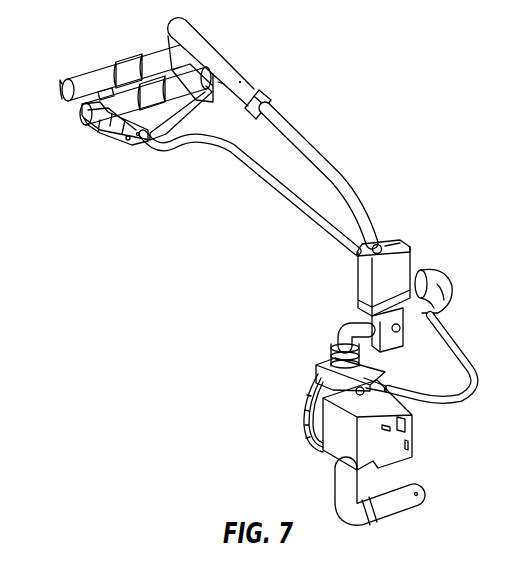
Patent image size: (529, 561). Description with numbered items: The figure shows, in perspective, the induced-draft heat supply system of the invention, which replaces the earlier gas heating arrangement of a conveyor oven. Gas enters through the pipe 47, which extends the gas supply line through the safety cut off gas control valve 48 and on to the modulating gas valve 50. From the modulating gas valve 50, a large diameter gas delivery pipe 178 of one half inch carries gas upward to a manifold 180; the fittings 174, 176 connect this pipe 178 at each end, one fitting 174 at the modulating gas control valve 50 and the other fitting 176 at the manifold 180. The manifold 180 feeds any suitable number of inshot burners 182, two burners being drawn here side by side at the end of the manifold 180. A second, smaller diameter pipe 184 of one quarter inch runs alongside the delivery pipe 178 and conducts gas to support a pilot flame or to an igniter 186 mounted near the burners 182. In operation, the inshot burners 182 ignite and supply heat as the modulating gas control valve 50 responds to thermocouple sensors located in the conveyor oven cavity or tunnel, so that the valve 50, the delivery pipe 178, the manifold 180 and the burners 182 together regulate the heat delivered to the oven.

The pipe 47 is at (400, 504).
The safety cut off gas control valve 48 is at (343, 438).
The modulating gas valve 50 is at (364, 284).
The fitting 174 is at (418, 270).
The fitting 176 is at (258, 96).
The gas delivery pipe 178 is at (341, 175).
The manifold 180 is at (200, 44).
The inshot burners 182 is at (112, 74).
The pipe 184 is at (280, 190).
The igniter 186 is at (103, 133).